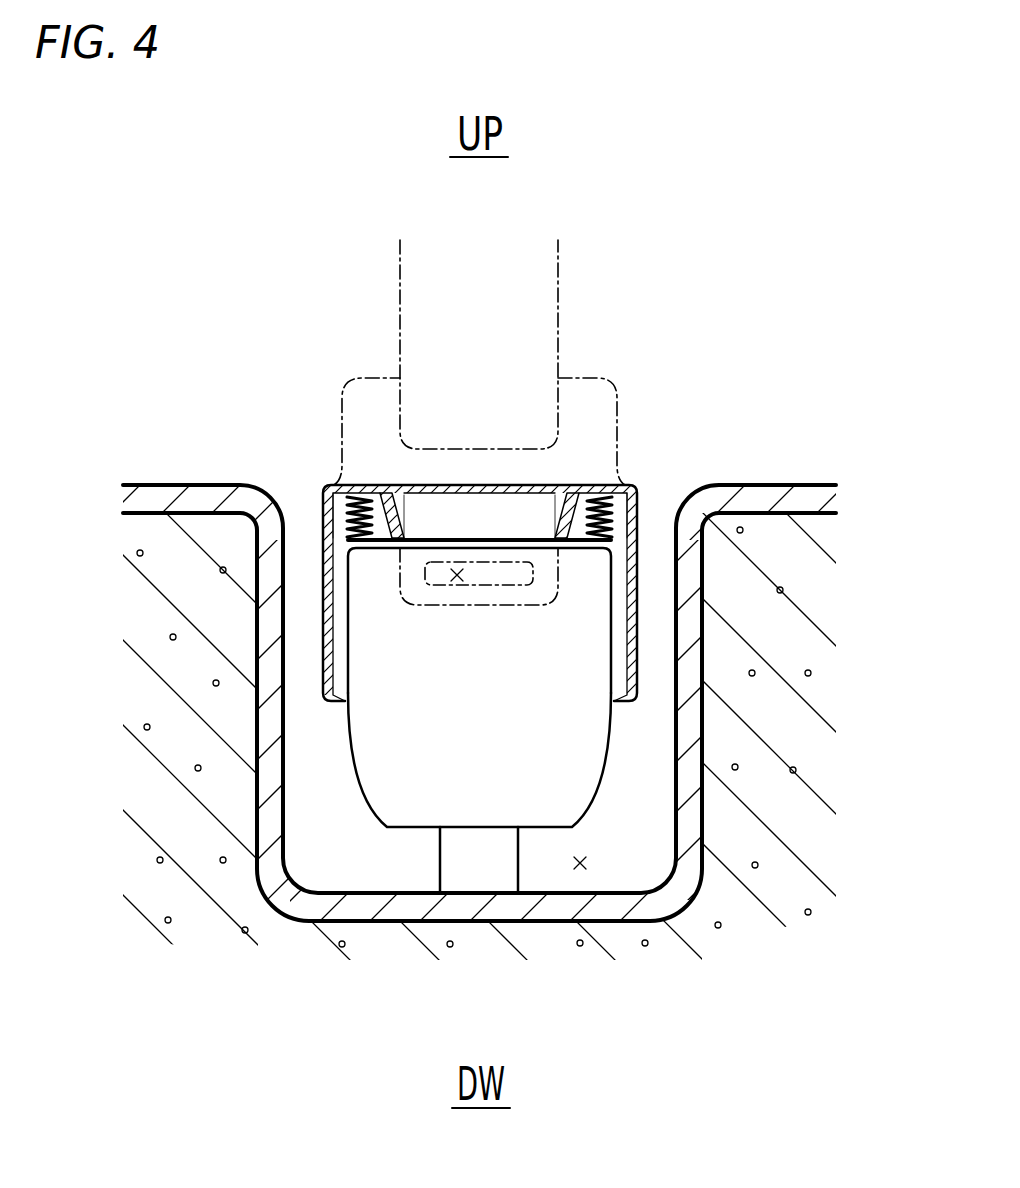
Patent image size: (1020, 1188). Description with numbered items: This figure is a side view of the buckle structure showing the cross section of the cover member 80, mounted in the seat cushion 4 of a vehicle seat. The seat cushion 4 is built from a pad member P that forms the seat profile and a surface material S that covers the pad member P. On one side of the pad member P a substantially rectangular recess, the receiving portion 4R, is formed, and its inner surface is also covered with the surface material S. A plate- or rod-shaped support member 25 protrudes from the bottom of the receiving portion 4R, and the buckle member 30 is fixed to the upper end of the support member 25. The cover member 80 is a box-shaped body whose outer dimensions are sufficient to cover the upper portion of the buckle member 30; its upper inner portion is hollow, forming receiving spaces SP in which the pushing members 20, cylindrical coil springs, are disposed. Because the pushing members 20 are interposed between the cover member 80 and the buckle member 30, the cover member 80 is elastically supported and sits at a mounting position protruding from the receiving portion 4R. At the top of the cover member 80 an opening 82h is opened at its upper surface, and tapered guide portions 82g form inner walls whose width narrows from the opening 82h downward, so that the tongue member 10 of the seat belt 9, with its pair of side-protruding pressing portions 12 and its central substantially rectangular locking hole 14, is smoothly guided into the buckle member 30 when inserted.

The seat cushion 4 is at (130, 445).
The receiving portion 4R is at (580, 870).
The surface material S is at (205, 498).
The pad member P is at (798, 547).
The seat belt 9 is at (425, 283).
The tongue member 10 is at (595, 400).
The pressing portions 12 is at (333, 477).
The locking hole 14 is at (453, 587).
The pushing members 20 is at (380, 545).
The support member 25 is at (452, 860).
The buckle member 30 is at (565, 790).
The cover member 80 is at (323, 620).
The guide portions 82g is at (397, 495).
The opening 82h is at (463, 481).
The receiving spaces SP is at (322, 520).